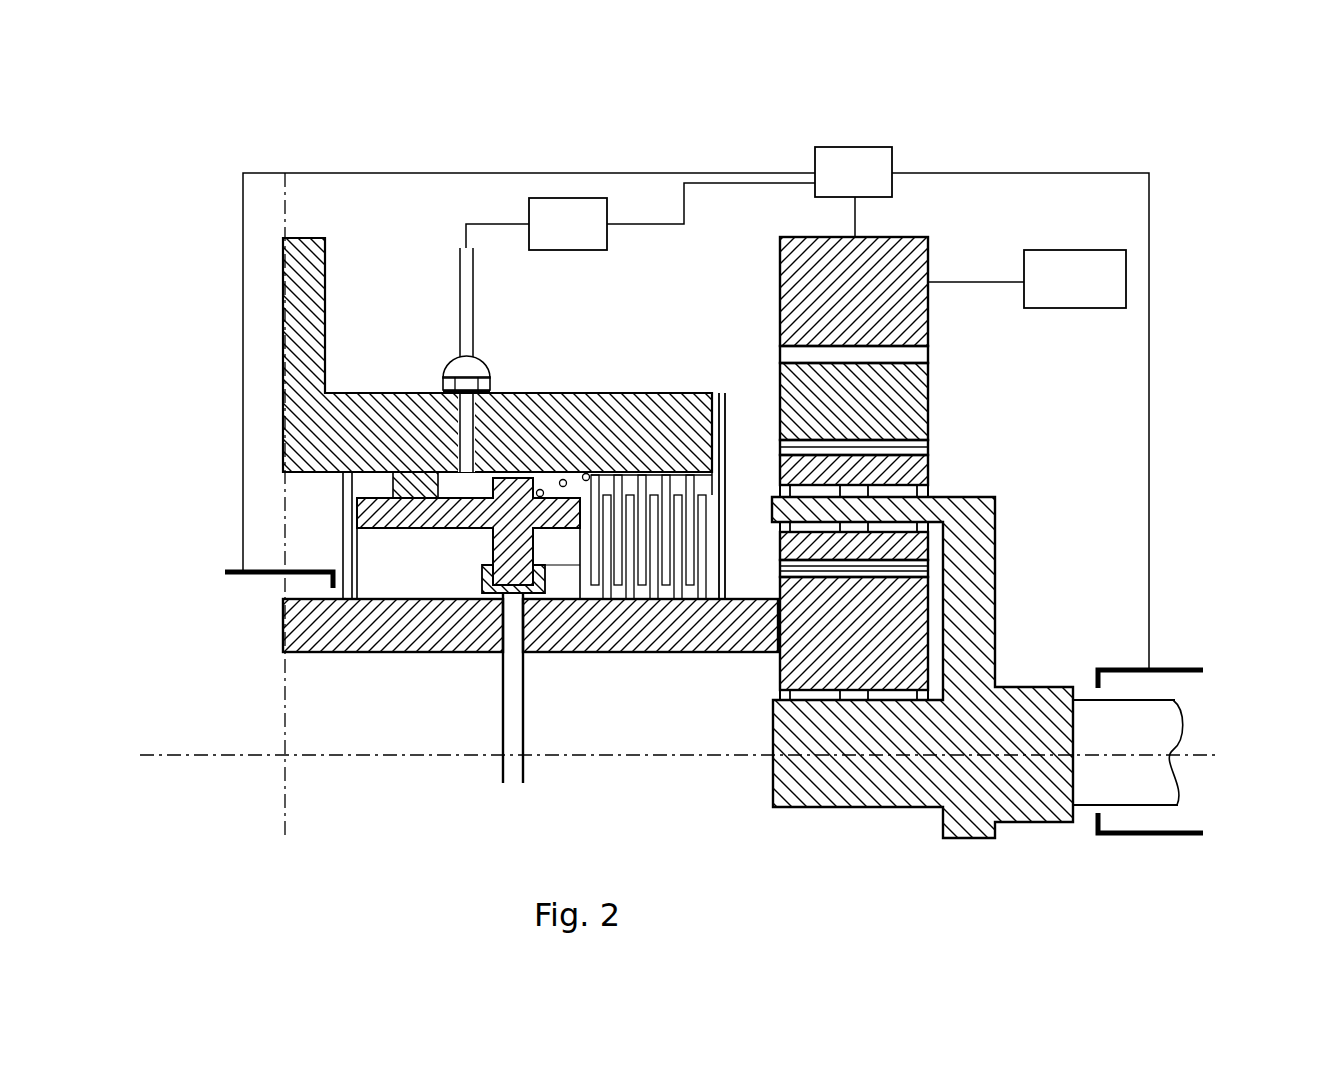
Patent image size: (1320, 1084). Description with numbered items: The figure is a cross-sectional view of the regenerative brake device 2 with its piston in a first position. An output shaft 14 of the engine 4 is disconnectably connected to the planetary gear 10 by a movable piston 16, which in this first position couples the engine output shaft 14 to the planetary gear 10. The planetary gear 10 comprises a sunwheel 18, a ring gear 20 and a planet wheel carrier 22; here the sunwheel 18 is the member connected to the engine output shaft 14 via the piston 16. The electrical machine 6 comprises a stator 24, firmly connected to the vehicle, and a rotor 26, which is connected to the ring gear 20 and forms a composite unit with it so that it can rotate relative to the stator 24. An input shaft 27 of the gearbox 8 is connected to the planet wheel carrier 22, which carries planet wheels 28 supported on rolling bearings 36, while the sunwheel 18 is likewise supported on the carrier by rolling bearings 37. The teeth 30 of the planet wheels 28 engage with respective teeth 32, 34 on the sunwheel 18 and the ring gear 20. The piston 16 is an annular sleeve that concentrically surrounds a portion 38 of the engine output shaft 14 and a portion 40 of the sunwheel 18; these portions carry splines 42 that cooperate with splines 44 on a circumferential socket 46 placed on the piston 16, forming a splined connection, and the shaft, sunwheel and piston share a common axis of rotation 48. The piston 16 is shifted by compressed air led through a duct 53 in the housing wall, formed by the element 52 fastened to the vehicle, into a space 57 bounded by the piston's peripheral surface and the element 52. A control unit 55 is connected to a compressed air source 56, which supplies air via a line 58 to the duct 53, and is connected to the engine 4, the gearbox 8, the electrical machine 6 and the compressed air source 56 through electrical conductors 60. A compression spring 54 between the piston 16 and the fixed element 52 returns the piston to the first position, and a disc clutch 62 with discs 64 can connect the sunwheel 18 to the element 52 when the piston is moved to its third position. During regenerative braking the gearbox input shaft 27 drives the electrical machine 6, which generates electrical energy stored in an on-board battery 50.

The regenerative brake device 2 is at (716, 302).
The engine 4 is at (232, 568).
The electrical machine 6 is at (982, 242).
The gearbox 8 is at (1180, 670).
The planetary gear 10 is at (1058, 402).
The engine output shaft 14 is at (355, 653).
The movable piston 16 is at (362, 512).
The sunwheel 18 is at (742, 652).
The ring gear 20 is at (928, 395).
The planet wheel carrier 22 is at (995, 570).
The stator 24 is at (890, 237).
The rotor 26 is at (928, 373).
The gearbox input shaft 27 is at (1183, 728).
The planet wheels 28 is at (928, 475).
The teeth of the planet wheels 30 is at (928, 453).
The teeth of the sunwheel 32 is at (928, 573).
The teeth of the ring gear 34 is at (928, 445).
The rolling bearings 36 is at (928, 493).
The rolling bearings 37 is at (810, 697).
The portion of the engine output shaft 38 is at (460, 597).
The portion of the sunwheel 40 is at (573, 600).
The splines 42 is at (557, 593).
The splines on the piston 44 is at (540, 600).
The circumferential socket 46 is at (482, 573).
The axis of rotation 48 is at (415, 757).
The on-board battery 50 is at (1126, 282).
The element 52 is at (653, 393).
The duct 53 is at (477, 433).
The compression spring 54 is at (566, 480).
The control unit 55 is at (893, 152).
The compressed air source 56 is at (597, 250).
The space 57 is at (463, 487).
The line 58 is at (460, 270).
The electrical conductors 60 is at (593, 173).
The disc clutch 62 is at (739, 430).
The discs 64 is at (658, 587).